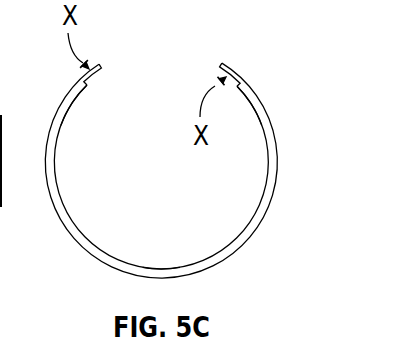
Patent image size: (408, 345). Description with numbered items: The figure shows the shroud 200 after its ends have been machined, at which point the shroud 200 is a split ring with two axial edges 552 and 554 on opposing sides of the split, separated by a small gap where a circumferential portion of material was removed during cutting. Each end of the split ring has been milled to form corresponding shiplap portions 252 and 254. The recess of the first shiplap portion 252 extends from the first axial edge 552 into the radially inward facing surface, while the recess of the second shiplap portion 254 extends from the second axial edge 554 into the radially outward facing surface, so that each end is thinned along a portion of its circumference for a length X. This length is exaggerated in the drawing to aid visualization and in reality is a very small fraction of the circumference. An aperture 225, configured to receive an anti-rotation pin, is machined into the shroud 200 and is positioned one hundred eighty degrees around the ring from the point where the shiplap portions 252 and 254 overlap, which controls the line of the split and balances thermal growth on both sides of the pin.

The shroud 200 is at (261, 221).
The aperture 225 is at (162, 280).
The first shiplap portion 252 is at (95, 75).
The second shiplap portion 254 is at (230, 72).
The first axial edge 552 is at (99, 66).
The second axial edge 554 is at (218, 68).